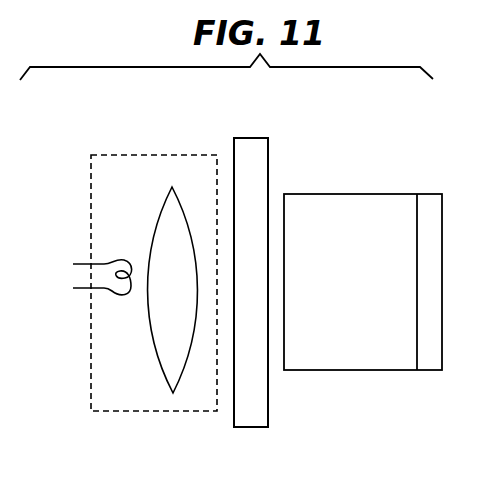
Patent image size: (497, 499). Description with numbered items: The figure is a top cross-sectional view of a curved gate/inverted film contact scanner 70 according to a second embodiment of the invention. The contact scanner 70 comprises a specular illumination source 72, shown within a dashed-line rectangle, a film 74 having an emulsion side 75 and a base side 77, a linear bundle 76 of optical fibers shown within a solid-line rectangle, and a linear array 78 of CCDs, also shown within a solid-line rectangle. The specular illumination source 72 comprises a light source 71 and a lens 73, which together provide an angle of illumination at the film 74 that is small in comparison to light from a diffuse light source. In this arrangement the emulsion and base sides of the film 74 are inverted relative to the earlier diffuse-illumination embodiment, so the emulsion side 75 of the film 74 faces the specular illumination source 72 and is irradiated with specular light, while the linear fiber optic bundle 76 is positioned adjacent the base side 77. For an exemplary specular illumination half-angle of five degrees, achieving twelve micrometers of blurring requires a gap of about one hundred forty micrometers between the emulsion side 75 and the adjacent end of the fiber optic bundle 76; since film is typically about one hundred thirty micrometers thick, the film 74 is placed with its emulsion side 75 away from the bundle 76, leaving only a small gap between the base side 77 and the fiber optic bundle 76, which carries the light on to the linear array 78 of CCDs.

The curved gate/inverted film contact scanner 70 is at (350, 99).
The light source 71 is at (121, 254).
The specular illumination source 72 is at (148, 162).
The lens 73 is at (152, 218).
The film 74 is at (245, 138).
The emulsion side 75 is at (233, 148).
The linear bundle of optical fibers 76 is at (327, 198).
The base side 77 is at (268, 157).
The linear array of CCDs 78 is at (428, 201).